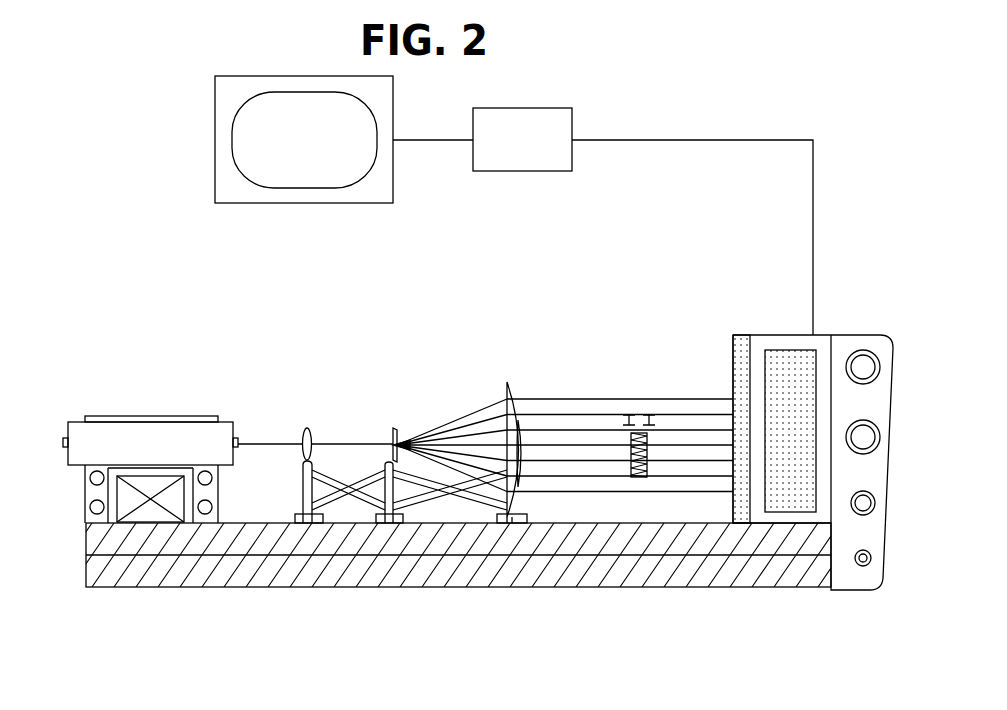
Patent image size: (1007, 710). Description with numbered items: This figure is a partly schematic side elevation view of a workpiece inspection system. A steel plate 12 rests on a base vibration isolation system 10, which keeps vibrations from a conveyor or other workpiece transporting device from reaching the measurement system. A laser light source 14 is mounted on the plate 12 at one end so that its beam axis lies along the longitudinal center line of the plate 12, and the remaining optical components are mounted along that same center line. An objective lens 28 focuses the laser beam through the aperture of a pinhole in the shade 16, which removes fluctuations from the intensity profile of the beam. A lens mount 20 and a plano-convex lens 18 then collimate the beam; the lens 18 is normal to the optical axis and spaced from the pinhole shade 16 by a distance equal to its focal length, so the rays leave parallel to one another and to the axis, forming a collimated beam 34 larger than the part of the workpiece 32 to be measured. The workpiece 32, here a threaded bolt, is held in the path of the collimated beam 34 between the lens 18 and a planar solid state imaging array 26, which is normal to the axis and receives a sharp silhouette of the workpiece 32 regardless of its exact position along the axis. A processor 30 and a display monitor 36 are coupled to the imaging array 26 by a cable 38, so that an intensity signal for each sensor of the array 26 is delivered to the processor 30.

The base vibration isolation system 10 is at (362, 590).
The steel plate 12 is at (289, 540).
The laser light source 14 is at (142, 417).
The pinhole shade 16 is at (392, 428).
The plano-convex lens 18 is at (502, 397).
The lens mount 20 is at (520, 425).
The planar solid state imaging array 26 is at (741, 333).
The objective lens 28 is at (303, 427).
The processor 30 is at (537, 171).
The workpiece 32 is at (628, 407).
The collimated beam 34 is at (683, 430).
The display monitor 36 is at (282, 203).
The cable 38 is at (813, 228).